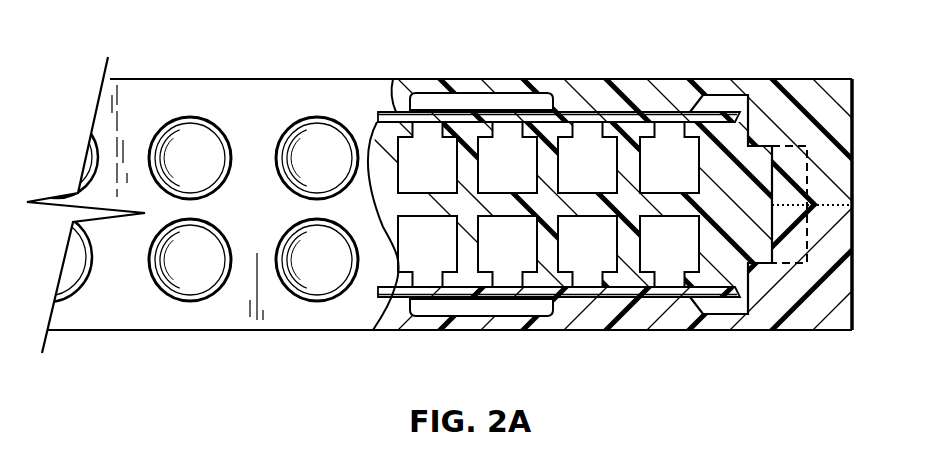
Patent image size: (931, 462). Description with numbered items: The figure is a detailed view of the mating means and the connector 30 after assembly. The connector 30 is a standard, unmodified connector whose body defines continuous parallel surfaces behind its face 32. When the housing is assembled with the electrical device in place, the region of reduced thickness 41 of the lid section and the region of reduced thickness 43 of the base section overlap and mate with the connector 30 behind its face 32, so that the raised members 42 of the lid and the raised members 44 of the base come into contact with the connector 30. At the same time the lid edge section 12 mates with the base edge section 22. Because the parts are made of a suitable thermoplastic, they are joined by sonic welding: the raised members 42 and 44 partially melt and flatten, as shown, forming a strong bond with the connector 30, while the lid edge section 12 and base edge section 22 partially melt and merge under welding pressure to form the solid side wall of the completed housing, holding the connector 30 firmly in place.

The lid edge section 12 is at (832, 160).
The base edge section 22 is at (838, 242).
The connector 30 is at (730, 182).
The face 32 is at (133, 102).
The region of reduced thickness 41 is at (470, 87).
The raised member 42 is at (630, 100).
The region of reduced thickness 43 is at (493, 323).
The raised member 44 is at (652, 310).